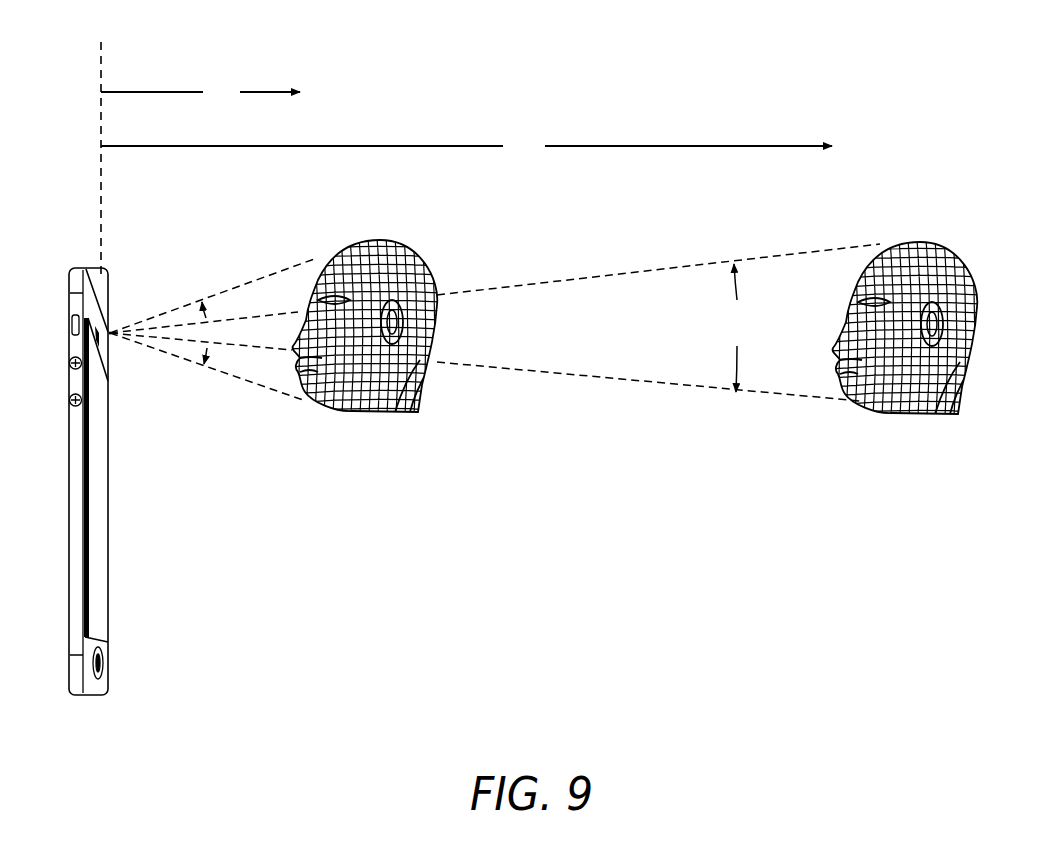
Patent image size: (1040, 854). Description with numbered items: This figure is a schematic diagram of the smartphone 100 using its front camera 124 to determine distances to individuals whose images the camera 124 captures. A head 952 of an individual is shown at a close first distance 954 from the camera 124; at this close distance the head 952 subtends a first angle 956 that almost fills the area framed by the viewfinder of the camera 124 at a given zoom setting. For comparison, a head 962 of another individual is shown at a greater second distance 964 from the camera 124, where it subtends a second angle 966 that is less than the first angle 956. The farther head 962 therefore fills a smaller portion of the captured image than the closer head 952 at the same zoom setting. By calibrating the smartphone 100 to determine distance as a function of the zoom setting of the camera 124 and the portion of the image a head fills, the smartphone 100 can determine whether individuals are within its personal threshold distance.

The smartphone 100 is at (110, 661).
The front camera 124 is at (114, 330).
The head 952 is at (399, 240).
The distance d1 954 is at (224, 71).
The angle theta 1 956 is at (224, 333).
The head 962 is at (916, 242).
The distance d2 964 is at (526, 125).
The angle theta 2 966 is at (758, 328).